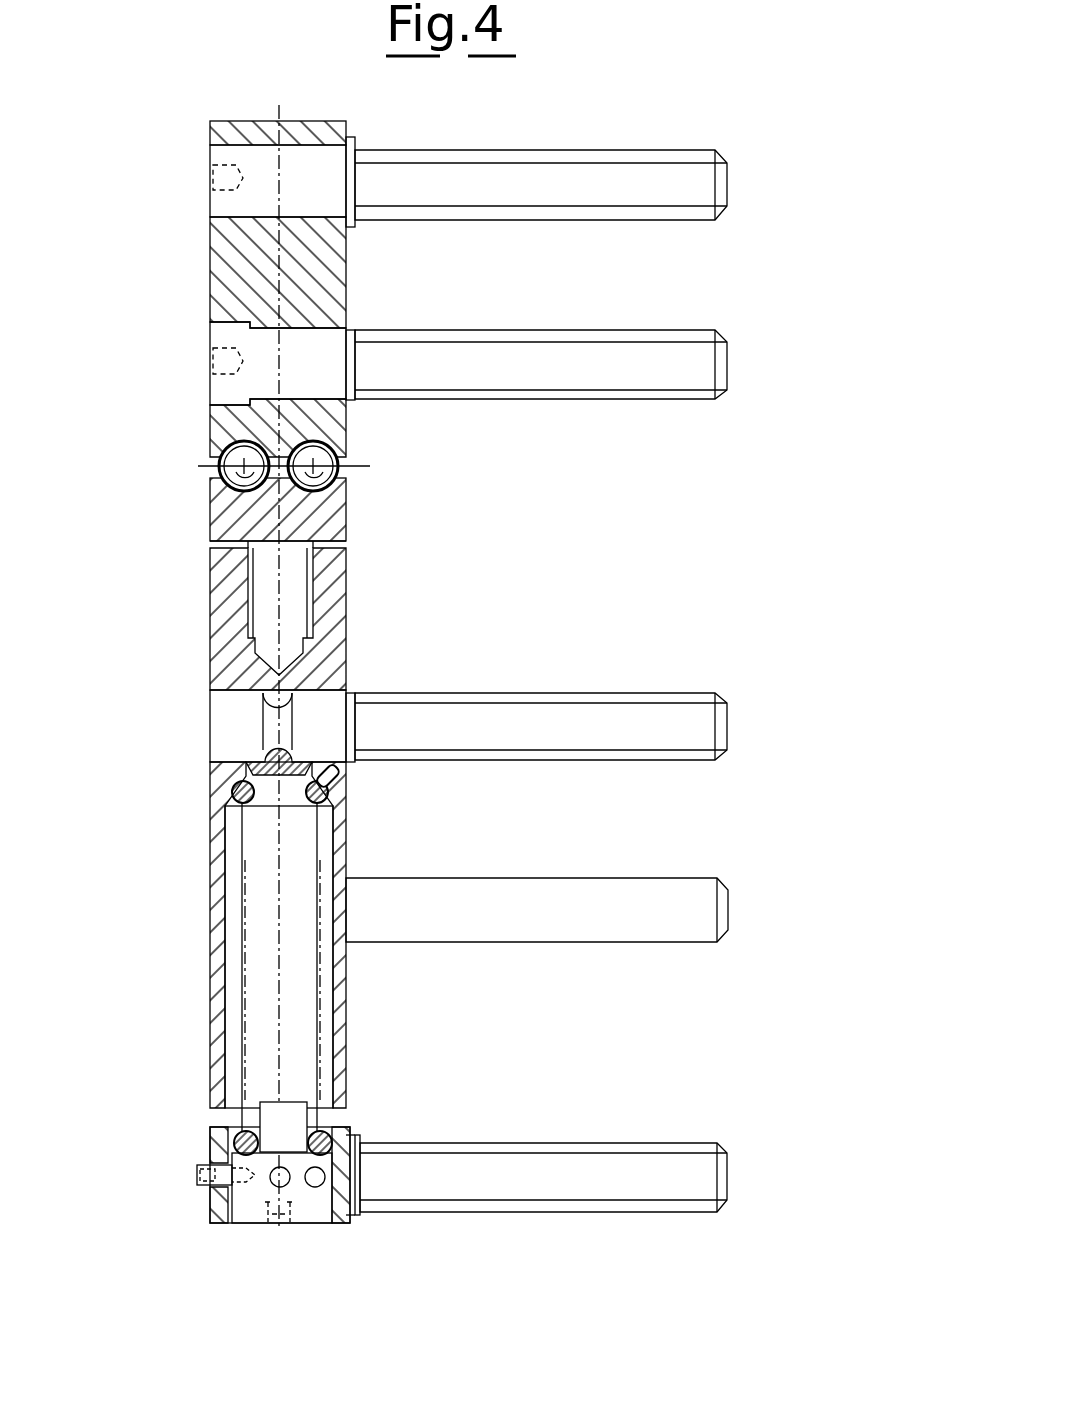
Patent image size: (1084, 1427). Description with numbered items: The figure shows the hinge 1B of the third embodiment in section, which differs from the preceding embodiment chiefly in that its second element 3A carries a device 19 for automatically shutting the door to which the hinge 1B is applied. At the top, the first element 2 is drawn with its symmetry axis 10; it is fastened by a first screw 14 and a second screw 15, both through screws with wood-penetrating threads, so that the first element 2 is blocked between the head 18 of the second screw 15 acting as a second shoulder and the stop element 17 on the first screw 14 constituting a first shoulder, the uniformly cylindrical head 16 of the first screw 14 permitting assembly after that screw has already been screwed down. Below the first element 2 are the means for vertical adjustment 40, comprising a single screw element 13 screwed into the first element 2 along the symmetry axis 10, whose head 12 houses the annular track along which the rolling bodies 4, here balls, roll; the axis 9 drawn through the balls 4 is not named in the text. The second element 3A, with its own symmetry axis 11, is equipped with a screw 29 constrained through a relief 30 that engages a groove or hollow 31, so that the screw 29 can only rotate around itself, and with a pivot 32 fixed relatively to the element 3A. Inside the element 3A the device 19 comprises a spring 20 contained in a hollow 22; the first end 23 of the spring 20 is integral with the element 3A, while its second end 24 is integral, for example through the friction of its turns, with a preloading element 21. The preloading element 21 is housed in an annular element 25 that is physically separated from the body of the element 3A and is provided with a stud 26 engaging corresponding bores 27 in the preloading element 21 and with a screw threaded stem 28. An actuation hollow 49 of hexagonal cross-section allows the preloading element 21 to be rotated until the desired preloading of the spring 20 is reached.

The hinge 1B is at (745, 102).
The symmetry axis 10 is at (272, 108).
The first element 2 is at (232, 264).
The head of the first screw 16 is at (226, 162).
The stop element 17 is at (354, 182).
The first screw 14 is at (522, 178).
The head of the second screw 18 is at (226, 340).
The second screw 15 is at (510, 365).
The head of the screw element 12 is at (222, 512).
The rolling bodies 4 is at (236, 452).
The ball axis 9 is at (346, 466).
The screw element 13 is at (340, 504).
The means for vertical adjustment 40 is at (356, 536).
The second element 3A is at (182, 678).
The screw 29 is at (554, 726).
The groove or hollow 31 is at (262, 701).
The relief 30 is at (250, 771).
The device for automatically shutting the door 19 is at (182, 848).
The first end of the spring 23 is at (336, 778).
The spring 20 is at (241, 932).
The hollow 22 is at (238, 1064).
The pivot 32 is at (562, 903).
The annular element 25 is at (218, 1210).
The second end of the spring 24 is at (330, 1140).
The preloading element 21 is at (248, 1210).
The stud 26 is at (198, 1172).
The bores 27 is at (315, 1186).
The symmetry axis 11 is at (280, 1196).
The actuation hollow 49 is at (289, 1210).
The screw threaded stem 28 is at (600, 1172).